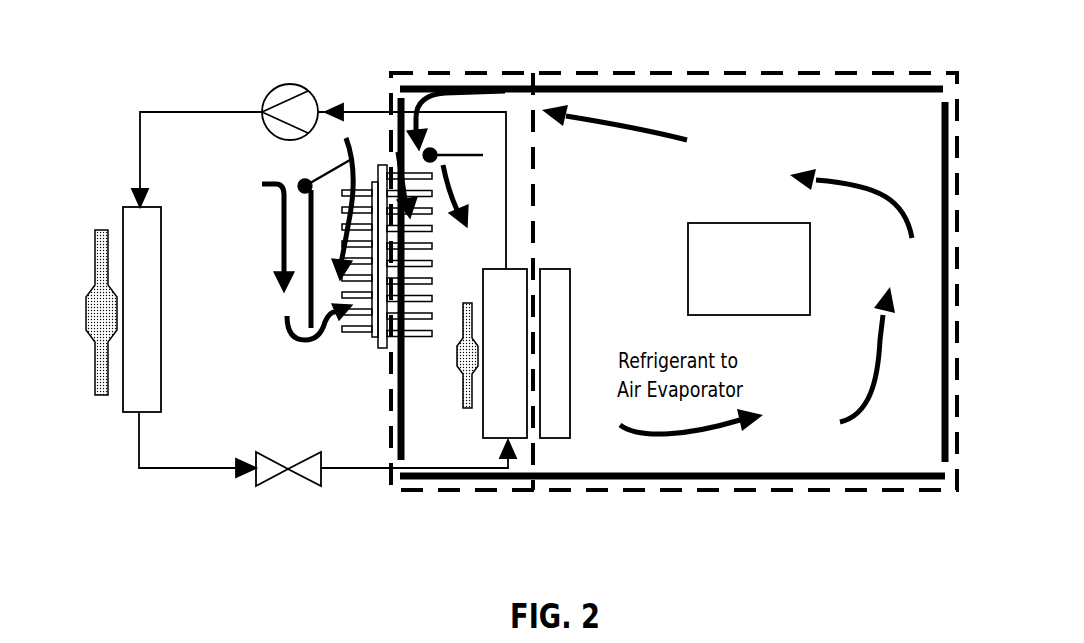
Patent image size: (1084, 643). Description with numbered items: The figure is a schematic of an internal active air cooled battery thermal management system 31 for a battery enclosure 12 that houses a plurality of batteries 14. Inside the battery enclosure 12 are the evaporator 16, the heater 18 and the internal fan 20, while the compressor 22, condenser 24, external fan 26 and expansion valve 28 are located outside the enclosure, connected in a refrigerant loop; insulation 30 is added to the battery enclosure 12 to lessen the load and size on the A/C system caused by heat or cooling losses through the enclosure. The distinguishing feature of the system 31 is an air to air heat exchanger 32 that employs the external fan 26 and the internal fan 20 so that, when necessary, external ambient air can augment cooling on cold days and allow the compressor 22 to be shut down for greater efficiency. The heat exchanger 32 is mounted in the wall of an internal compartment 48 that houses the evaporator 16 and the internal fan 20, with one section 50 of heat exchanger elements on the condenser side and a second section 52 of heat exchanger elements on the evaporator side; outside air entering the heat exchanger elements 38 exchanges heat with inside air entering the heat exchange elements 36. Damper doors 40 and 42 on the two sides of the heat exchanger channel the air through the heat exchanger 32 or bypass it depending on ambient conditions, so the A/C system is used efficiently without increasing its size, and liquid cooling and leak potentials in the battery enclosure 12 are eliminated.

The battery enclosure 12 is at (750, 492).
The batteries 14 is at (763, 281).
The evaporator 16 is at (516, 368).
The heater 18 is at (567, 337).
The internal fan 20 is at (467, 410).
The compressor 22 is at (272, 86).
The condenser 24 is at (156, 305).
The external fan 26 is at (98, 228).
The expansion valve 28 is at (275, 460).
The insulation 30 is at (737, 473).
The thermal management system 31 is at (101, 50).
The air to air heat exchanger 32 is at (330, 352).
The heat exchange elements 36 is at (455, 257).
The heat exchanger elements 38 is at (287, 315).
The damper door 40 is at (463, 153).
The damper door 42 is at (323, 172).
The internal compartment 48 is at (440, 72).
The section of heat exchanger elements 50 is at (358, 330).
The second section of heat exchanger elements 52 is at (413, 337).